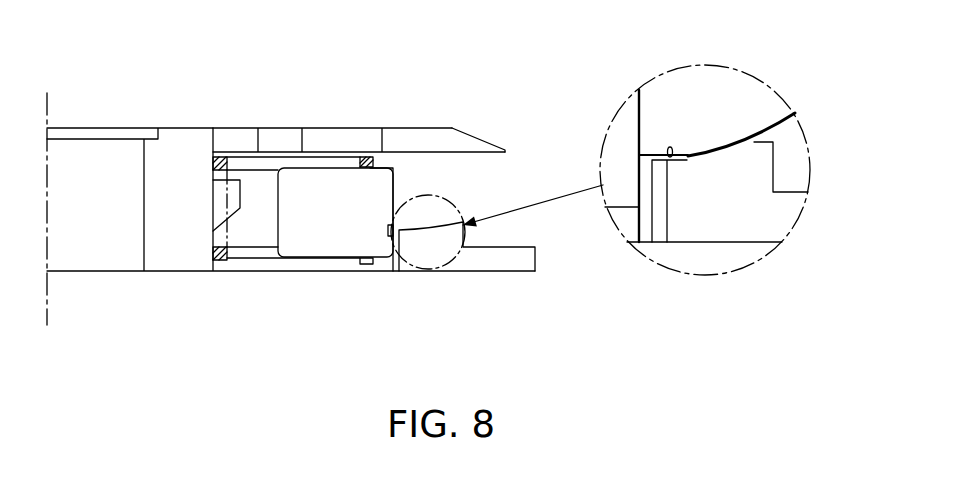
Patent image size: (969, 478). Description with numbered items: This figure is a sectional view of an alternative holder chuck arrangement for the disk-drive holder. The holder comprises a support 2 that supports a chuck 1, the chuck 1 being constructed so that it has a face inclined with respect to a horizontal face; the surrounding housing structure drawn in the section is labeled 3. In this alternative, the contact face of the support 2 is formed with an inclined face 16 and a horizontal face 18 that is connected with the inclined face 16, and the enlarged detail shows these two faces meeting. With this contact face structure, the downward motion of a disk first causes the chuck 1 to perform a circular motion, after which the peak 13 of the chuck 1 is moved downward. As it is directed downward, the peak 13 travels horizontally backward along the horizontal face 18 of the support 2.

The chuck 1 is at (438, 160).
The support 2 is at (436, 249).
The housing 3 is at (337, 133).
The peak 13 is at (512, 143).
The inclined face 16 is at (750, 148).
The horizontal face 18 is at (667, 160).